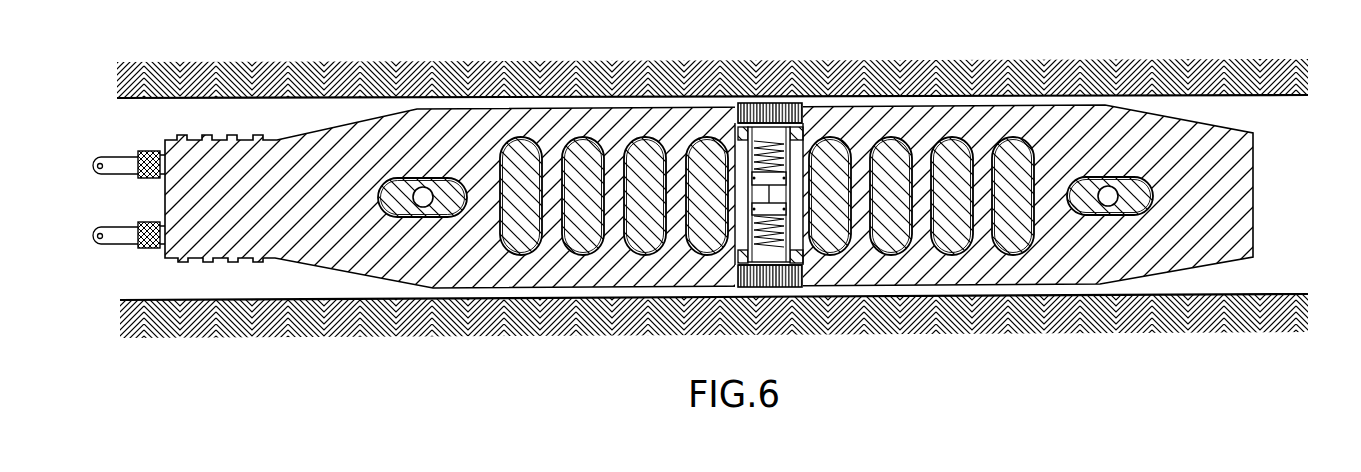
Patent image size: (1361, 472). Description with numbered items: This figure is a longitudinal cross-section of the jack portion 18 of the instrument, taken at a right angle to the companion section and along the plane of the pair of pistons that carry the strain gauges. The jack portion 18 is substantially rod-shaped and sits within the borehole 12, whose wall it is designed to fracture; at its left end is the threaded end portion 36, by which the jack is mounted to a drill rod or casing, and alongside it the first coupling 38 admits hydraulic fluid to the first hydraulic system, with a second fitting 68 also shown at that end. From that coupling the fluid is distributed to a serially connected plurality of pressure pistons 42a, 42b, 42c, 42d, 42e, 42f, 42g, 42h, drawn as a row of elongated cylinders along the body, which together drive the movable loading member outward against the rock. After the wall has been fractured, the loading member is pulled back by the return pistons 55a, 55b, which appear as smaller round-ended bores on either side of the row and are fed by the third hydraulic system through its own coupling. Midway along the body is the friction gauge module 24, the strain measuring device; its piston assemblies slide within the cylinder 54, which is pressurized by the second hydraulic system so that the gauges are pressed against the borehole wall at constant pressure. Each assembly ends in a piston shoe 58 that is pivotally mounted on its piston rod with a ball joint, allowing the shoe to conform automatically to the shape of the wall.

The borehole 12 is at (1181, 91).
The jack portion 18 is at (952, 54).
The friction gauge module 24 is at (762, 103).
The threaded end portion 36 is at (208, 139).
The first coupling 38 is at (141, 178).
The pressure piston 42a is at (509, 204).
The pressure piston 42b is at (571, 204).
The pressure piston 42c is at (633, 204).
The pressure piston 42d is at (695, 204).
The pressure piston 42e is at (818, 204).
The pressure piston 42f is at (879, 204).
The pressure piston 42g is at (940, 204).
The pressure piston 42h is at (1001, 204).
The cylinder 54 is at (757, 197).
The return piston 55a is at (403, 200).
The return piston 55b is at (1143, 192).
The piston shoe 58 is at (777, 117).
The electrical cable 68 is at (150, 249).